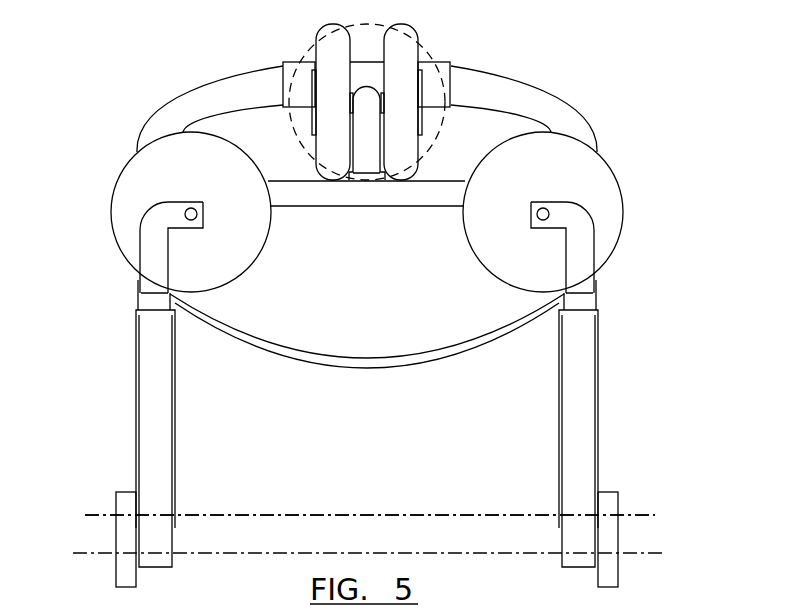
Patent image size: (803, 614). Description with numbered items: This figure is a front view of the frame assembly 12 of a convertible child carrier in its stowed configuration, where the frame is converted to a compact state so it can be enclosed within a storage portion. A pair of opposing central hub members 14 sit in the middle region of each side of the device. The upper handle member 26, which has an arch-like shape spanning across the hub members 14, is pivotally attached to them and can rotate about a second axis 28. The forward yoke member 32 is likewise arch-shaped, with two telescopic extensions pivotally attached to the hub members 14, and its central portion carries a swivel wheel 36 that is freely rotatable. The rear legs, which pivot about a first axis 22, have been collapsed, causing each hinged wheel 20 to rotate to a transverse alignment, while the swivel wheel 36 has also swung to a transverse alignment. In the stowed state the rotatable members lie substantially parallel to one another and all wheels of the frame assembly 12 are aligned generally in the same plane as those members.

The frame assembly 12 is at (666, 83).
The central hub member 14 is at (131, 492).
The hinged wheel 20 is at (112, 192).
The first axis 22 is at (643, 548).
The upper handle member 26 is at (514, 82).
The second axis 28 is at (635, 511).
The forward yoke member 32 is at (403, 207).
The swivel wheel 36 is at (315, 52).